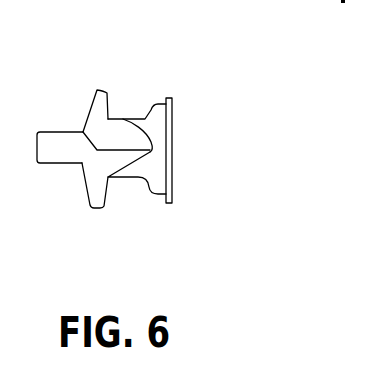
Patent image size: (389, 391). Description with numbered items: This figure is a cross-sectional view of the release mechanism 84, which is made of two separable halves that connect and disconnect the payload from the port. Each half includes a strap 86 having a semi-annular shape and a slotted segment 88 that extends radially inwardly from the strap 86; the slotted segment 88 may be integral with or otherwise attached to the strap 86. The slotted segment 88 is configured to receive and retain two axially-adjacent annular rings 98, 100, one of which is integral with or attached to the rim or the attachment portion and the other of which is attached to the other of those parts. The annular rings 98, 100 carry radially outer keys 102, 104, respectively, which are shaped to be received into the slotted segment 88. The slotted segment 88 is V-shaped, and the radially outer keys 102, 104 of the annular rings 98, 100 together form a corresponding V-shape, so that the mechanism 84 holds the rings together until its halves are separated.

The mechanism 84 is at (155, 146).
The strap 86 is at (182, 117).
The slotted segment 88 is at (139, 106).
The annular ring 98 is at (90, 116).
The annular ring 100 is at (82, 178).
The radially outer key 102 is at (120, 118).
The radially outer key 104 is at (131, 155).